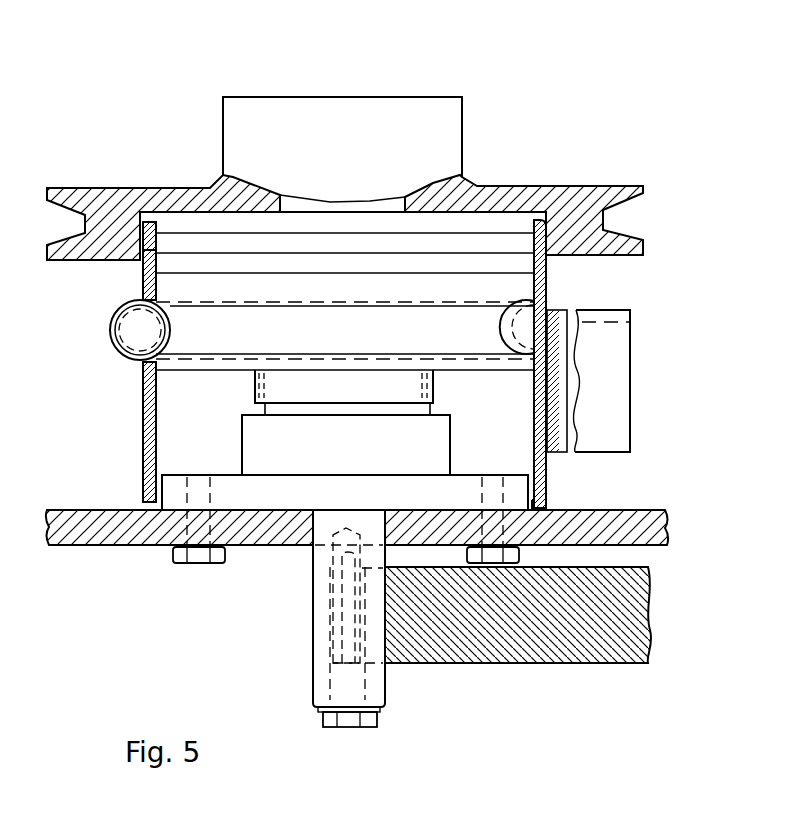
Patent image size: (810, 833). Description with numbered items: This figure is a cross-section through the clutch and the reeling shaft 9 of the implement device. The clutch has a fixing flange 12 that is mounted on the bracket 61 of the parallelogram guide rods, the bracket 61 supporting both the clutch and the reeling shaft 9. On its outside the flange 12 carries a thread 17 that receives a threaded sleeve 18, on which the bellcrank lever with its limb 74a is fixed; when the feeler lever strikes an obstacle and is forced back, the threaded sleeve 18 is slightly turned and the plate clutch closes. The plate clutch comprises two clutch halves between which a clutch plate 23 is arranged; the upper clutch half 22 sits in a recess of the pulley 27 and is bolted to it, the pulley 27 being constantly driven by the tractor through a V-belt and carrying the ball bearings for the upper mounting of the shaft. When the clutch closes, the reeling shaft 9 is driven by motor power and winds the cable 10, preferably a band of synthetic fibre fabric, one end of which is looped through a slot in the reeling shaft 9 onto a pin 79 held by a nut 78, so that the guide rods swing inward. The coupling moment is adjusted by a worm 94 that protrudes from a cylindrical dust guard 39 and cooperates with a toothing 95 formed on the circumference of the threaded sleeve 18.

The reeling shaft 9 is at (325, 613).
The cable 10 is at (477, 666).
The fixing flange 12 is at (275, 500).
The thread 17 is at (255, 390).
The threaded sleeve 18 is at (155, 368).
The upper clutch half 22 is at (181, 226).
The clutch plate 23 is at (173, 243).
The pulley 27 is at (492, 190).
The cylindrical dust guard 39 is at (150, 445).
The bracket 61 is at (98, 543).
The limb of the bellcrank lever 74a is at (618, 387).
The nut 78 is at (353, 720).
The pin 79 is at (350, 634).
The worm 94 is at (132, 337).
The toothing 95 is at (540, 314).